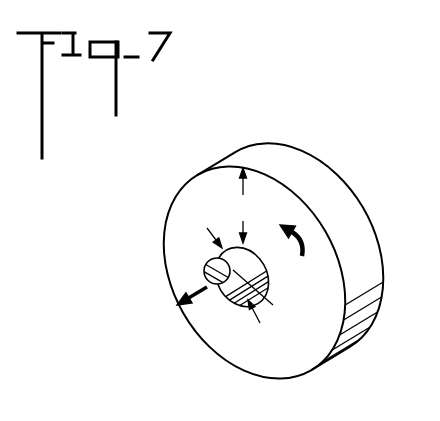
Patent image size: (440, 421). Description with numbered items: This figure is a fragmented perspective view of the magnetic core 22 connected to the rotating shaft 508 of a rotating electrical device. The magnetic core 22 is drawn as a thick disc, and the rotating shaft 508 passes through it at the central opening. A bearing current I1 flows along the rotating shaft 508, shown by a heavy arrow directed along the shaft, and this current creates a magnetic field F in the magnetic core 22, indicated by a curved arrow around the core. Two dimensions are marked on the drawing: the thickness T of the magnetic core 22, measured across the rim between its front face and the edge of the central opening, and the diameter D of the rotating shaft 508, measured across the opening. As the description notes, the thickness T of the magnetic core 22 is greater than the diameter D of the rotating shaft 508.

The magnetic core 22 is at (328, 139).
The rotating shaft 508 is at (214, 284).
The thickness T is at (242, 205).
The magnetic field F is at (282, 233).
The diameter D is at (249, 275).
The bearing current I1 is at (183, 308).